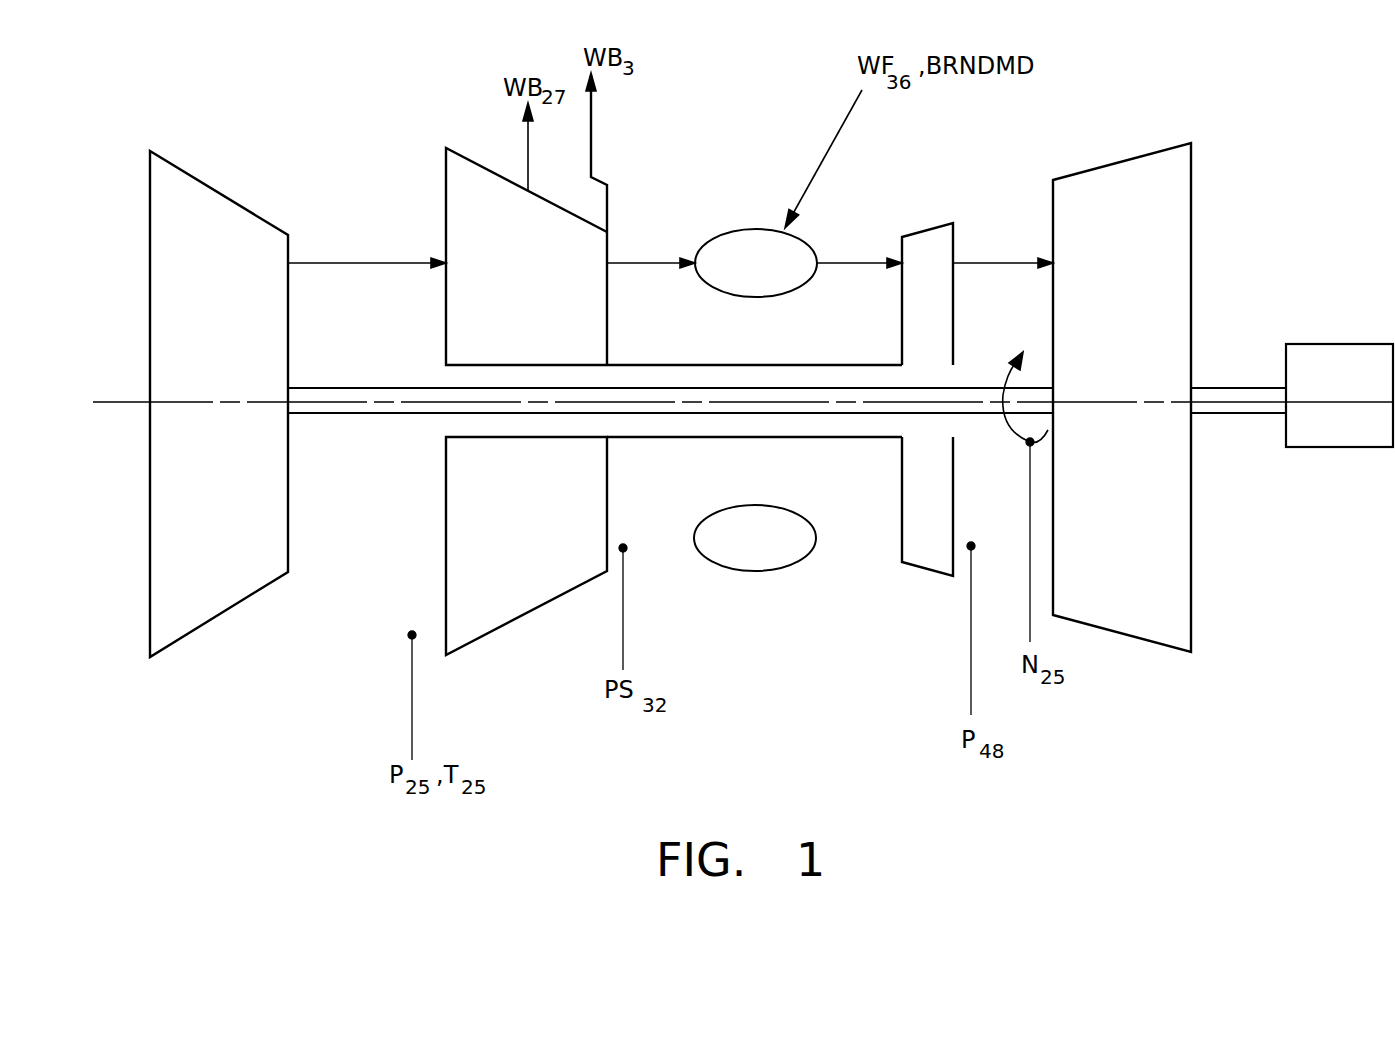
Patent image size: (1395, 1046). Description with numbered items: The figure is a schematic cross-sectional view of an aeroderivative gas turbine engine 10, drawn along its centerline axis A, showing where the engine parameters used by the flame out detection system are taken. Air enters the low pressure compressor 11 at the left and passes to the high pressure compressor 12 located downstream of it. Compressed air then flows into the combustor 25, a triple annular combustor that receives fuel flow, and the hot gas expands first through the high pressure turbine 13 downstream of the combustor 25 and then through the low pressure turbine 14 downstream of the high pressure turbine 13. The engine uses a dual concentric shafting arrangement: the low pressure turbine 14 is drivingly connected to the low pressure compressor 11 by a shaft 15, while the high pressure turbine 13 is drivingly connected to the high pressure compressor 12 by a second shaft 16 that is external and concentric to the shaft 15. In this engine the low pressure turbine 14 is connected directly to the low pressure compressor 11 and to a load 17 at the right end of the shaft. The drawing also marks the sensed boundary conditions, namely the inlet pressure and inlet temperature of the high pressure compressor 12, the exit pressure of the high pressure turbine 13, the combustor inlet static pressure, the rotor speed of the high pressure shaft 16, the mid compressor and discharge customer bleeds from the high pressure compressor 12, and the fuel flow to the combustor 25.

The aeroderivative gas turbine engine 10 is at (342, 172).
The engine centerline axis A is at (128, 402).
The low pressure compressor 11 is at (157, 602).
The high pressure compressor 12 is at (503, 610).
The high pressure turbine 13 is at (907, 530).
The low pressure turbine 14 is at (1170, 568).
The shaft 15 is at (345, 416).
The second shaft 16 is at (640, 437).
The load 17 is at (1305, 352).
The combustor 25 is at (743, 248).